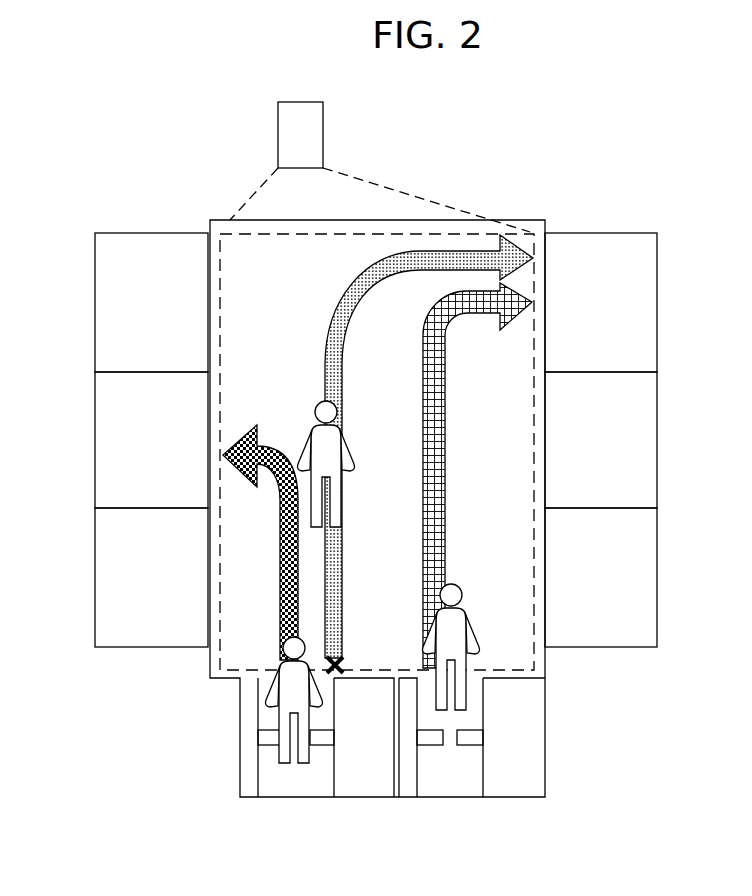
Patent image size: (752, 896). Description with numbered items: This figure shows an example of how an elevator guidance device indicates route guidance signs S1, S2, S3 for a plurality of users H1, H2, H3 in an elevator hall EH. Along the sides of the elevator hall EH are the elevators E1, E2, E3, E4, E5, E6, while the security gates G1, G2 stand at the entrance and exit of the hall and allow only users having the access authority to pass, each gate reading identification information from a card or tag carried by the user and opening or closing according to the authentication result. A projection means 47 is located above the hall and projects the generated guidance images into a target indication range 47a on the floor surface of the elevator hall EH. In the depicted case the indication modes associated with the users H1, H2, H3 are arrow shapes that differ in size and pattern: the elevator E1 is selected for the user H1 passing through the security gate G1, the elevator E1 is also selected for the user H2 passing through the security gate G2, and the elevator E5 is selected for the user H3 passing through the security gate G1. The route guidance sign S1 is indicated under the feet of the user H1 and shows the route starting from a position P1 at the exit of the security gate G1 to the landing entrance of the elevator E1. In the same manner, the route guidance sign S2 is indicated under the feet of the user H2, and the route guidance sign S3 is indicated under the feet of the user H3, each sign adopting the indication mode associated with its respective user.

The projection means 47 is at (325, 140).
The target indication range 47a is at (427, 232).
The elevator hall EH is at (528, 220).
The elevator E1 is at (660, 305).
The elevator E2 is at (660, 447).
The elevator E3 is at (660, 580).
The elevator E4 is at (95, 305).
The elevator E5 is at (95, 445).
The elevator E6 is at (95, 580).
The route guidance sign S1 is at (342, 362).
The route guidance sign S2 is at (442, 513).
The route guidance sign S3 is at (277, 603).
The user H1 is at (345, 430).
The user H2 is at (468, 622).
The user H3 is at (300, 765).
The position of the exit of the security gate P1 is at (348, 657).
The security gate G1 is at (370, 800).
The security gate G2 is at (517, 797).